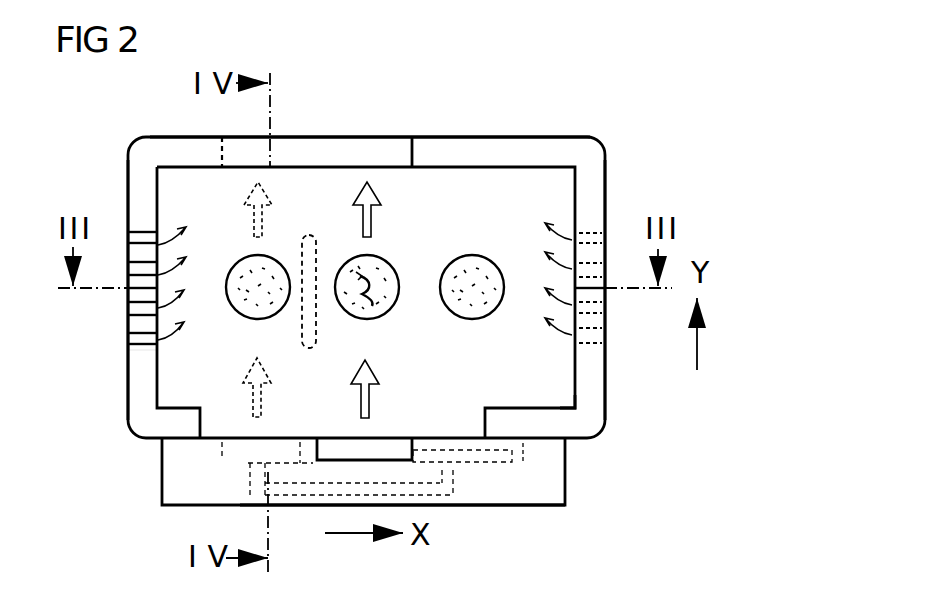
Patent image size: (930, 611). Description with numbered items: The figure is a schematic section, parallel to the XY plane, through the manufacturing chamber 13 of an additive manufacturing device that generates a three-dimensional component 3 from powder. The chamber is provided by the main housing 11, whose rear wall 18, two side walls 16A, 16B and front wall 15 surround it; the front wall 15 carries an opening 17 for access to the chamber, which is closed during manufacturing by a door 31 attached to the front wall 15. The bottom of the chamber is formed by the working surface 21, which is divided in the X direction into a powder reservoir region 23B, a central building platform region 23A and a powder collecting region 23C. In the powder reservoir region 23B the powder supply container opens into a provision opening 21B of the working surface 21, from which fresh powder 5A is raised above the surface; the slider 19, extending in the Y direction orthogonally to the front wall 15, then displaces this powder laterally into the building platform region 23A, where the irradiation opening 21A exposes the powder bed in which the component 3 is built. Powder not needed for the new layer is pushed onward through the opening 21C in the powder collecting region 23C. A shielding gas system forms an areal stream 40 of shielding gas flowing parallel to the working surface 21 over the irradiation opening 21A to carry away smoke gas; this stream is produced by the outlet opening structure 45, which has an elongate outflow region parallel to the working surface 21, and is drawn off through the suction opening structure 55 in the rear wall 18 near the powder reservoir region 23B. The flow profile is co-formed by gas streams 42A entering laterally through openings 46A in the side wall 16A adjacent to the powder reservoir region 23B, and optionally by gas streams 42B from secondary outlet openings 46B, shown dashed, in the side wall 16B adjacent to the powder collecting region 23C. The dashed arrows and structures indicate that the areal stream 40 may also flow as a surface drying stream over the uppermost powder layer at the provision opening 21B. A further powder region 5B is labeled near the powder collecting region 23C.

The 3D component 3 is at (374, 309).
The fresh powder 5A is at (236, 276).
The second spindle / turbine element 5B is at (498, 310).
The main housing 11 is at (577, 168).
The manufacturing chamber 13 is at (550, 384).
The front wall 15 is at (583, 442).
The side wall 16A is at (128, 403).
The side wall 16B is at (606, 361).
The opening 17 is at (476, 428).
The rear wall 18 is at (521, 137).
The slider 19 is at (301, 330).
The working surface 21 is at (553, 197).
The irradiation opening 21A is at (344, 314).
The provision opening 21B is at (242, 324).
The opening 21C is at (454, 318).
The building platform region 23A is at (393, 258).
The powder reservoir region 23B is at (248, 388).
The powder collecting region 23C is at (489, 252).
The door 31 is at (566, 501).
The areal stream of shielding gas 40 is at (248, 210).
The gas streams 42A is at (140, 342).
The gas streams 42B is at (562, 344).
The outlet opening structure 45 is at (393, 442).
The openings 46A is at (135, 258).
The secondary outlet openings 46B is at (593, 270).
The suction opening structure 55 is at (285, 143).